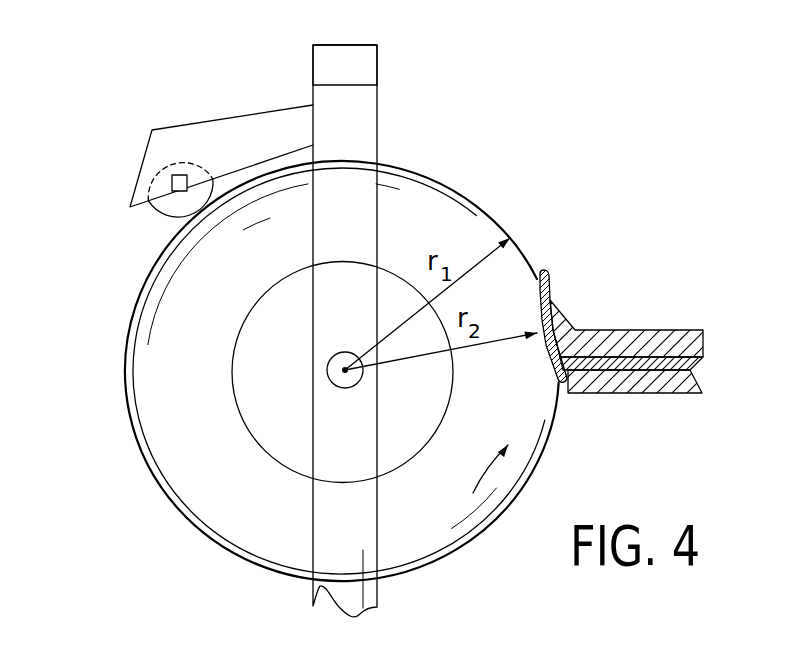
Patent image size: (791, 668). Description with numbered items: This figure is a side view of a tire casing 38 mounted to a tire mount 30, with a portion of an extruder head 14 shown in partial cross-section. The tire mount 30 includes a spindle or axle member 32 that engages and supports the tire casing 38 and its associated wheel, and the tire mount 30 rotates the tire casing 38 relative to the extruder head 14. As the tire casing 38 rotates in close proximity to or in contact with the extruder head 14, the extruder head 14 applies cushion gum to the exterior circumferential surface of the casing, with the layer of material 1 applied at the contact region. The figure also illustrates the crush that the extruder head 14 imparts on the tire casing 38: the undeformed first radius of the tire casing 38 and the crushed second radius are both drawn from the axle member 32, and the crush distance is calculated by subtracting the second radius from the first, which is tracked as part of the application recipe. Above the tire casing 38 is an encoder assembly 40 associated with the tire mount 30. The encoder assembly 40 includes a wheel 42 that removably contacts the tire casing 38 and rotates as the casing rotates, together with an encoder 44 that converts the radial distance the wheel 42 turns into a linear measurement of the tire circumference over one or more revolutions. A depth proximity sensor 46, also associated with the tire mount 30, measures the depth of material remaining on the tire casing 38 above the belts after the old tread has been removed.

The tire 1 is at (548, 291).
The extruder head 14 is at (664, 331).
The tire mount 30 is at (320, 586).
The spindle or axle member 32 is at (329, 361).
The tire casing 38 is at (133, 315).
The encoder assembly 40 is at (124, 136).
The wheel 42 is at (166, 216).
The encoder 44 is at (172, 184).
The depth proximity sensor 46 is at (378, 70).